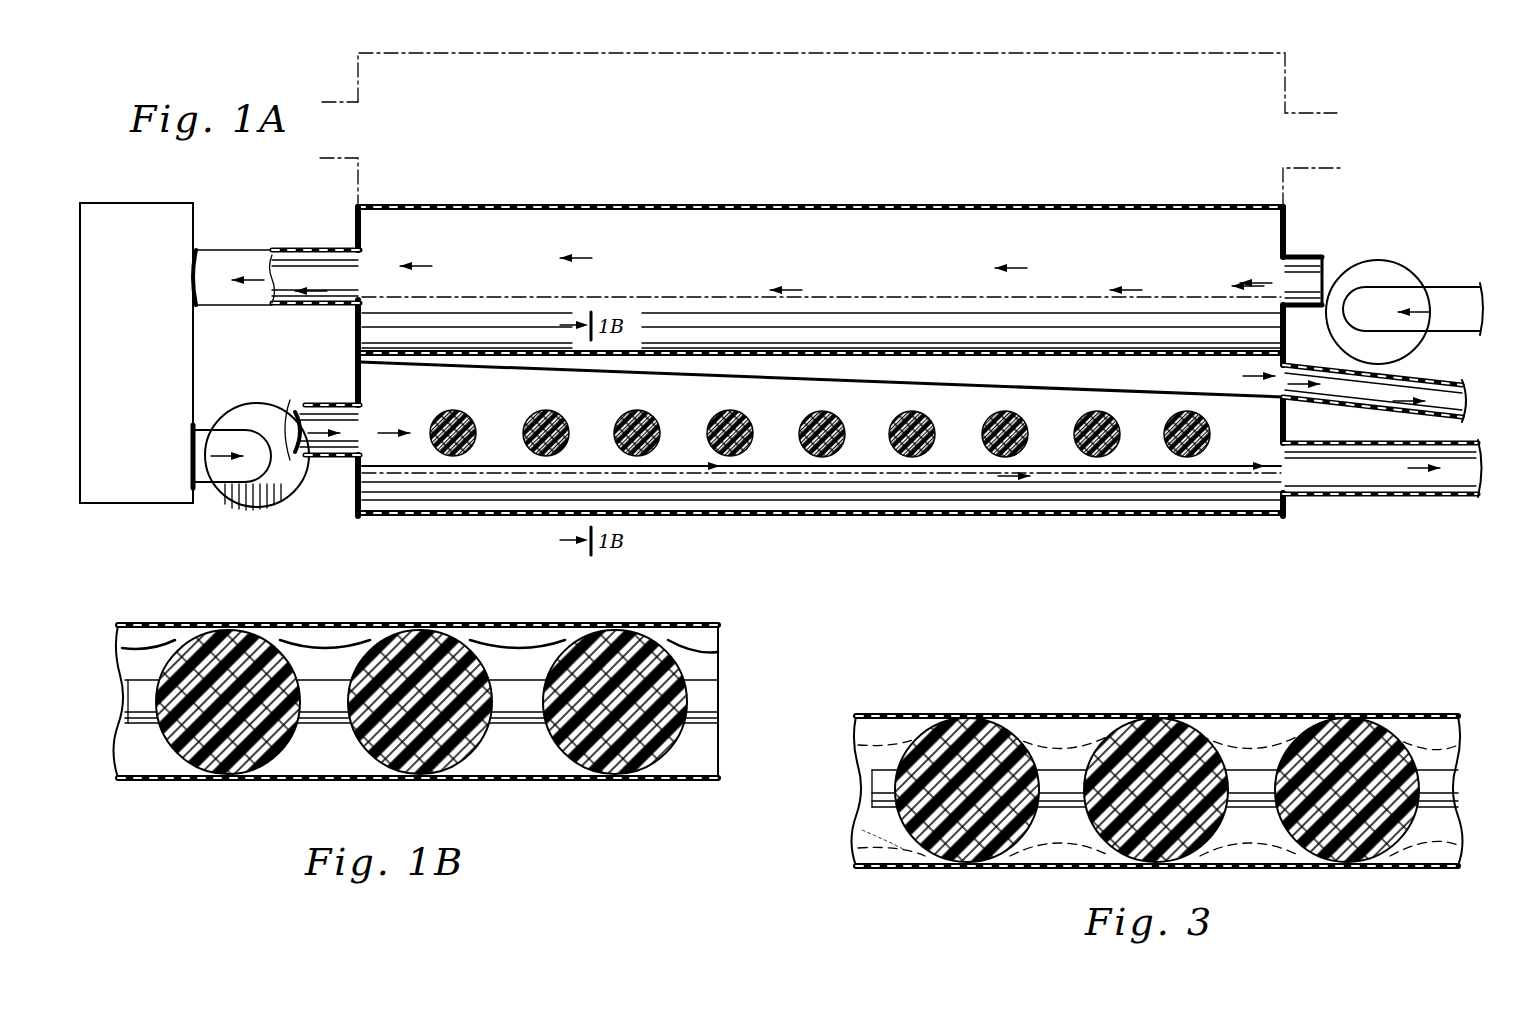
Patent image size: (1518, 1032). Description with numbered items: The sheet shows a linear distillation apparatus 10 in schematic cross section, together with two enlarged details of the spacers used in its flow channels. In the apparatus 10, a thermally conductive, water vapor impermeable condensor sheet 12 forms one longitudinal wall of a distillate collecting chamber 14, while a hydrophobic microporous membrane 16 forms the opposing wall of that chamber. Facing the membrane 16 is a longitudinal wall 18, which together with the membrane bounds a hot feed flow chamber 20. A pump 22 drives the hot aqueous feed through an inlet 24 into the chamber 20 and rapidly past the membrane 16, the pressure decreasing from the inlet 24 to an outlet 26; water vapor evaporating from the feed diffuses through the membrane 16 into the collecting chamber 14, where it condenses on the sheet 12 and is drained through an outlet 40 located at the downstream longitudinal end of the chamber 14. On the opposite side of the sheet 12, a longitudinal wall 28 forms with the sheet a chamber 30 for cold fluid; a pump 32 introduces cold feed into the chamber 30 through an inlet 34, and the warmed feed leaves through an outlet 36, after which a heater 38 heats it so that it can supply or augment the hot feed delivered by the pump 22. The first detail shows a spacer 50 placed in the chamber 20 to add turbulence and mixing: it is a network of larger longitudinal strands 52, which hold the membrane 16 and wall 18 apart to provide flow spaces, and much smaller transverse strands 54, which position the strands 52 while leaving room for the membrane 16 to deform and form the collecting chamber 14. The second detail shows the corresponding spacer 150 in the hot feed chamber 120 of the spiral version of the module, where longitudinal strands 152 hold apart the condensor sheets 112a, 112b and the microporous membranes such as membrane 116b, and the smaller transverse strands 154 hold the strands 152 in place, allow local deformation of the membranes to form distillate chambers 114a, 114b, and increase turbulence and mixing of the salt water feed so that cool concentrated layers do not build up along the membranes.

In FIG. 1A, the linear distillation apparatus 10 is at (1318, 96).
In FIG. 1A, the water vapor impermeable sheet 12 is at (1140, 352).
In FIG. 1B, the water vapor impermeable sheet 12 is at (548, 628).
In FIG. 1A, the distillate collecting chamber 14 is at (1255, 377).
In FIG. 1A, the microporous membrane 16 is at (960, 392).
In FIG. 1B, the microporous membrane 16 is at (675, 648).
In FIG. 1A, the longitudinal wall 18 is at (760, 516).
In FIG. 1B, the longitudinal wall 18 is at (520, 782).
In FIG. 1A, the hot feed flow chamber 20 is at (862, 472).
In FIG. 1A, the pump 22 is at (258, 507).
In FIG. 1A, the inlet 24 is at (345, 447).
In FIG. 1A, the outlet 26 is at (1292, 473).
In FIG. 1A, the longitudinal wall 28 is at (700, 207).
In FIG. 1A, the cold fluid chamber 30 is at (836, 253).
In FIG. 1A, the pump 32 is at (1376, 266).
In FIG. 1A, the inlet 34 is at (1292, 275).
In FIG. 1A, the outlet 36 is at (318, 278).
In FIG. 1A, the heater 38 is at (175, 232).
In FIG. 1A, the outlet 40 is at (1412, 388).
In FIG. 1B, the spacer 50 is at (160, 795).
In FIG. 1A, the longitudinal strands 52 is at (400, 472).
In FIG. 1B, the longitudinal strands 52 is at (612, 752).
In FIG. 1A, the transverse strands 54 is at (535, 441).
In FIG. 1B, the transverse strands 54 is at (705, 695).
In FIG. 3, the condensor sheet 112a is at (890, 716).
In FIG. 3, the condensor sheet 112b is at (908, 870).
In FIG. 3, the distillate chamber 114a is at (1050, 740).
In FIG. 3, the distillate chamber 114b is at (1050, 855).
In FIG. 3, the microporous membrane 116b is at (875, 847).
In FIG. 3, the hot feed flow chamber 120 is at (1242, 764).
In FIG. 3, the spacer 150 is at (1415, 842).
In FIG. 3, the longitudinal strands 152 is at (953, 724).
In FIG. 3, the transverse strands 154 is at (1065, 786).